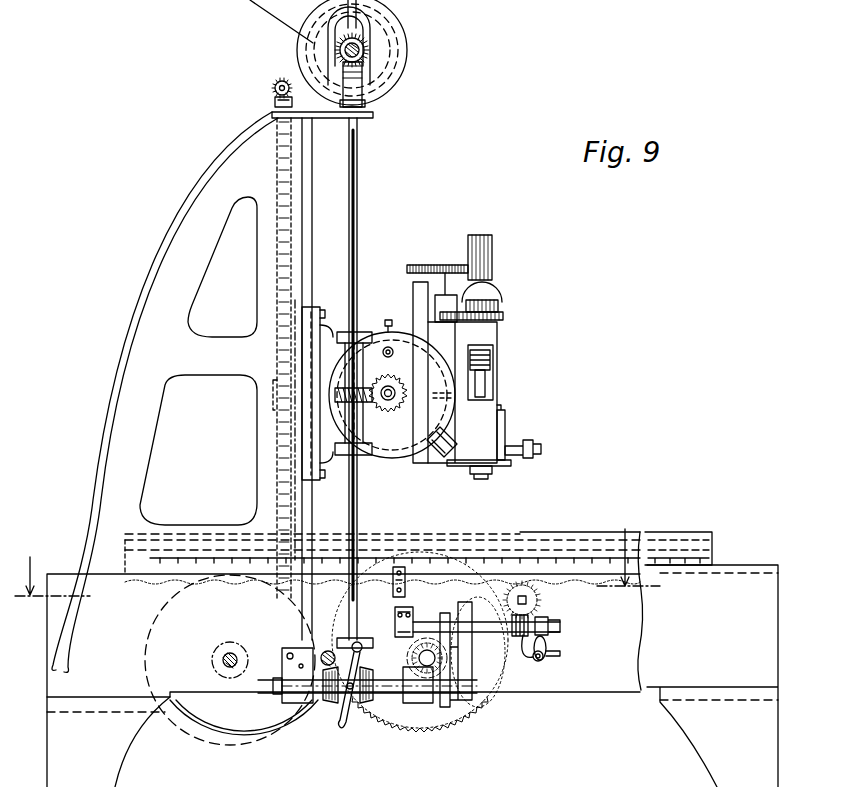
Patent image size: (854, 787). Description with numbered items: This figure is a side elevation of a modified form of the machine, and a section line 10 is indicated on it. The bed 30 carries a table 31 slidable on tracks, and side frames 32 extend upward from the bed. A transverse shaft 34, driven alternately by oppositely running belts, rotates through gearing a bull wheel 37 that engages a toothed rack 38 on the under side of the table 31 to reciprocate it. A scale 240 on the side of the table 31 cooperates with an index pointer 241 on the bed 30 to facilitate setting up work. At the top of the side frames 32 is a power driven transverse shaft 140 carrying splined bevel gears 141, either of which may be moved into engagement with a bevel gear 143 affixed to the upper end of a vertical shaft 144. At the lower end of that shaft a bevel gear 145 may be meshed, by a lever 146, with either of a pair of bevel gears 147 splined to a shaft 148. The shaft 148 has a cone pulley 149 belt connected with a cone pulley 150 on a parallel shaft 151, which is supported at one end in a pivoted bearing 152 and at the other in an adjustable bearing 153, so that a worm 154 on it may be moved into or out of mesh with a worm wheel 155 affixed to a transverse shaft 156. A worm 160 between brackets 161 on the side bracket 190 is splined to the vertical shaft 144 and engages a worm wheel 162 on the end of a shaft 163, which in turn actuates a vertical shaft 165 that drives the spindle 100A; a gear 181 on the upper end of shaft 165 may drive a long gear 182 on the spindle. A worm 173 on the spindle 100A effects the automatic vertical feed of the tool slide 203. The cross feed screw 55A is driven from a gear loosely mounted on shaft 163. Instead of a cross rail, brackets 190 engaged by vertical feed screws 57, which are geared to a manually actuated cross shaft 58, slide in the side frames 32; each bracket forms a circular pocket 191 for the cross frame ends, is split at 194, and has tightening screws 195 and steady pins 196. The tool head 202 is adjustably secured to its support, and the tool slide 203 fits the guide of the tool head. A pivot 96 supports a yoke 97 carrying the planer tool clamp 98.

The section line 10 is at (337, 552).
The bed 30 is at (613, 690).
The table 31 is at (694, 533).
The side frames 32 is at (138, 375).
The transverse shaft 34 is at (228, 652).
The bull wheel 37 is at (454, 730).
The toothed rack 38 is at (170, 588).
The cross feed screw 55A is at (393, 355).
The vertical screws 57 is at (276, 240).
The cross shaft 58 is at (278, 83).
The pivot 96 is at (505, 412).
The yoke 97 is at (492, 466).
The planer tool clamp 98 is at (524, 446).
The spindle 100A is at (486, 385).
The power driven transverse shaft 140 is at (367, 40).
The bevel gears 141 is at (368, 52).
The bevel gear 143 is at (372, 63).
The vertical shaft 144 is at (358, 226).
The bevel gear 145 is at (374, 659).
The lever 146 is at (345, 729).
The bevel gears 147 is at (322, 698).
The shaft 148 is at (407, 683).
The cone pulley 149 is at (462, 703).
The cone pulley 150 is at (452, 620).
The parallel shaft 151 is at (507, 633).
The pivoted bearing 152 is at (396, 627).
The adjustable bearing 153 is at (562, 640).
The worm 154 is at (540, 661).
The worm wheel 155 is at (546, 609).
The transverse shaft 156 is at (527, 595).
The worm 160 is at (380, 379).
The brackets 161 is at (357, 332).
The worm wheel 162 is at (398, 392).
The shaft 163 is at (389, 397).
The vertical shaft 165 is at (445, 295).
The worm 173 is at (491, 356).
The gear 181 is at (410, 265).
The gear 182 is at (491, 250).
The brackets 190 is at (333, 332).
The circular pocket 191 is at (386, 456).
The split 194 is at (440, 398).
The tightening screws 195 is at (452, 446).
The steady pins 196 is at (390, 322).
The tool head 202 is at (418, 290).
The tool slide 203 is at (490, 330).
The scale 240 is at (473, 557).
The index pointer 241 is at (399, 567).